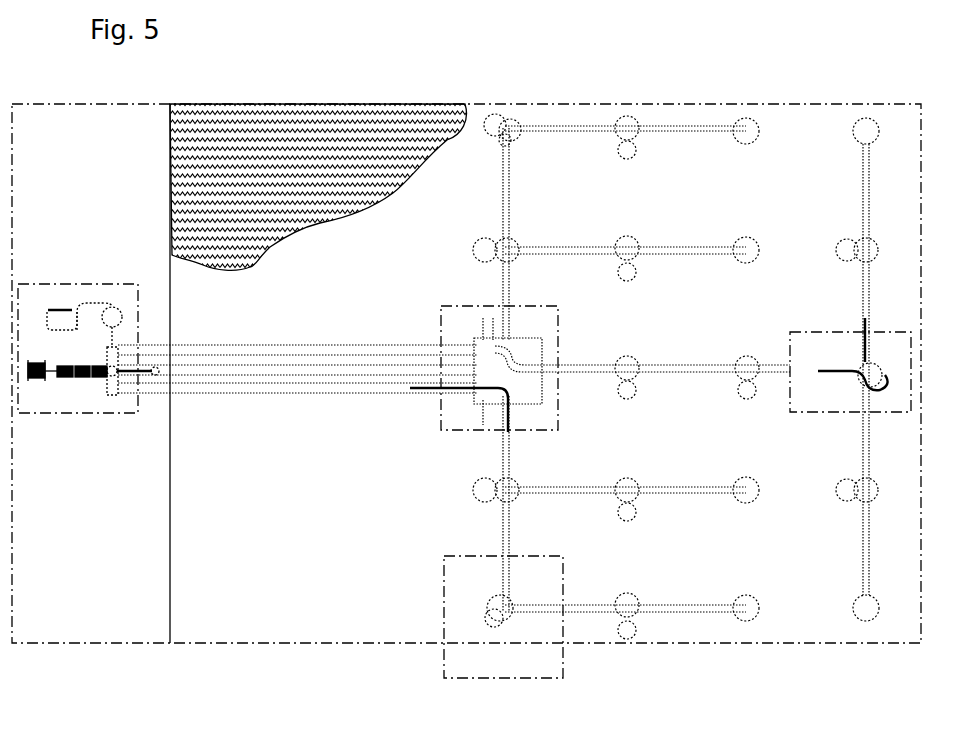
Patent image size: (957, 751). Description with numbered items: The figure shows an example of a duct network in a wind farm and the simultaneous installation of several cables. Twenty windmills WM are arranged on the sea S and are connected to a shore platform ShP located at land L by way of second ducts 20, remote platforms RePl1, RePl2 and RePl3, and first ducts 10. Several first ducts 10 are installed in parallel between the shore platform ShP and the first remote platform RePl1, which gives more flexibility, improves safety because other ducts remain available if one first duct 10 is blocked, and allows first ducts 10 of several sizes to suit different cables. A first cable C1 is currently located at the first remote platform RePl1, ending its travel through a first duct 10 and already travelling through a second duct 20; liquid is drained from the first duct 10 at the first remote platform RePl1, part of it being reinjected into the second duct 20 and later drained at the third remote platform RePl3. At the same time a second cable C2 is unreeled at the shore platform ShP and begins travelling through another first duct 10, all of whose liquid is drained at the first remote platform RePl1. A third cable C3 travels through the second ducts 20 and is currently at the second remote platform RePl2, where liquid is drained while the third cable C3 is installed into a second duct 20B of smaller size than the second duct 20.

The first duct 10 is at (218, 395).
The second duct 20 is at (525, 187).
The second duct 20B is at (860, 287).
The windmill WM is at (815, 697).
The first cable C1 is at (433, 390).
The second cable C2 is at (93, 378).
The third cable C3 is at (830, 373).
The land L is at (77, 178).
The sea S is at (318, 187).
The shore platform ShP is at (57, 282).
The first remote platform RePl1 is at (462, 305).
The second remote platform RePl2 is at (850, 332).
The third remote platform RePl3 is at (447, 679).